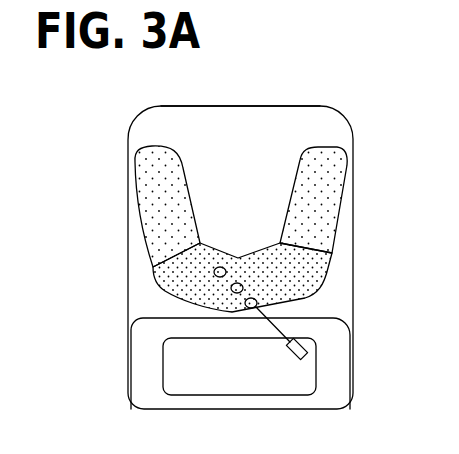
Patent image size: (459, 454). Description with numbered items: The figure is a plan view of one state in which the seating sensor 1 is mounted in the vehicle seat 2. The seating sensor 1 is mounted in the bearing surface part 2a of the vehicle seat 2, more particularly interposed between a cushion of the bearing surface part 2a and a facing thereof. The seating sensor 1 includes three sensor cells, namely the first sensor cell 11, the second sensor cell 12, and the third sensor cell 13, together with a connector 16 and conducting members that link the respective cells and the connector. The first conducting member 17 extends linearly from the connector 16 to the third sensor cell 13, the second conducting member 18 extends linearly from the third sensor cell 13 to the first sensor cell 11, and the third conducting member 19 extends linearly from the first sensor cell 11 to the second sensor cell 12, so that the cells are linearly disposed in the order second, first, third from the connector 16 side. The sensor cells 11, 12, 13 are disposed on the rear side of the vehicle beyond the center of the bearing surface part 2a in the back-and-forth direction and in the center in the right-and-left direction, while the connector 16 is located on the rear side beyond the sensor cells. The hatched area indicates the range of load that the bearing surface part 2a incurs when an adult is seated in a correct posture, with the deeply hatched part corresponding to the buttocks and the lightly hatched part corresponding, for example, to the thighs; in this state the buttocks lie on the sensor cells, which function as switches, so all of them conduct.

The seating sensor 1 is at (264, 324).
The vehicle seat 2 is at (325, 106).
The bearing surface part 2a is at (243, 115).
The first sensor cell 11 is at (231, 288).
The second sensor cell 12 is at (214, 272).
The third sensor cell 13 is at (245, 303).
The connector 16 is at (313, 340).
The first conducting member 17 is at (292, 318).
The second conducting member 18 is at (243, 288).
The third conducting member 19 is at (226, 271).